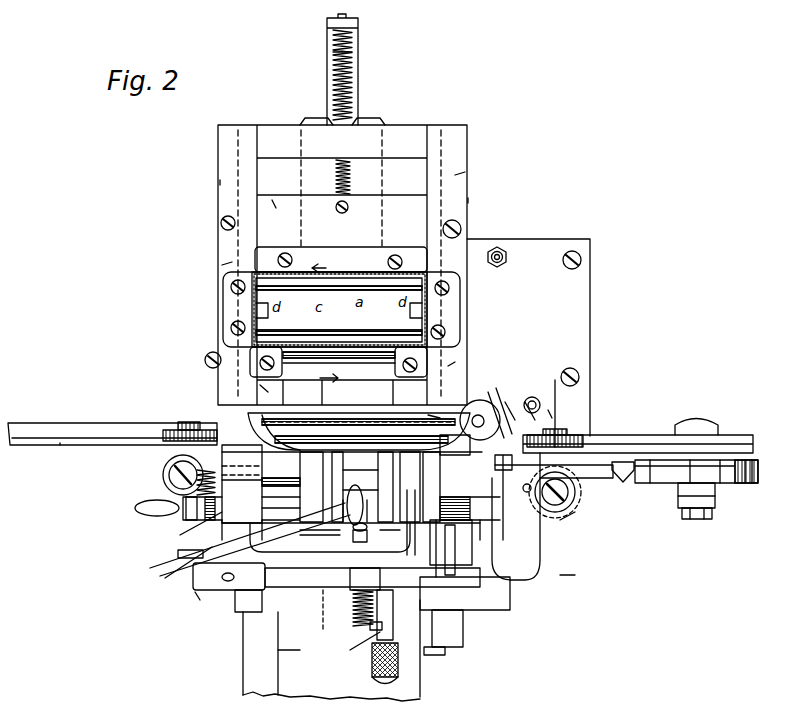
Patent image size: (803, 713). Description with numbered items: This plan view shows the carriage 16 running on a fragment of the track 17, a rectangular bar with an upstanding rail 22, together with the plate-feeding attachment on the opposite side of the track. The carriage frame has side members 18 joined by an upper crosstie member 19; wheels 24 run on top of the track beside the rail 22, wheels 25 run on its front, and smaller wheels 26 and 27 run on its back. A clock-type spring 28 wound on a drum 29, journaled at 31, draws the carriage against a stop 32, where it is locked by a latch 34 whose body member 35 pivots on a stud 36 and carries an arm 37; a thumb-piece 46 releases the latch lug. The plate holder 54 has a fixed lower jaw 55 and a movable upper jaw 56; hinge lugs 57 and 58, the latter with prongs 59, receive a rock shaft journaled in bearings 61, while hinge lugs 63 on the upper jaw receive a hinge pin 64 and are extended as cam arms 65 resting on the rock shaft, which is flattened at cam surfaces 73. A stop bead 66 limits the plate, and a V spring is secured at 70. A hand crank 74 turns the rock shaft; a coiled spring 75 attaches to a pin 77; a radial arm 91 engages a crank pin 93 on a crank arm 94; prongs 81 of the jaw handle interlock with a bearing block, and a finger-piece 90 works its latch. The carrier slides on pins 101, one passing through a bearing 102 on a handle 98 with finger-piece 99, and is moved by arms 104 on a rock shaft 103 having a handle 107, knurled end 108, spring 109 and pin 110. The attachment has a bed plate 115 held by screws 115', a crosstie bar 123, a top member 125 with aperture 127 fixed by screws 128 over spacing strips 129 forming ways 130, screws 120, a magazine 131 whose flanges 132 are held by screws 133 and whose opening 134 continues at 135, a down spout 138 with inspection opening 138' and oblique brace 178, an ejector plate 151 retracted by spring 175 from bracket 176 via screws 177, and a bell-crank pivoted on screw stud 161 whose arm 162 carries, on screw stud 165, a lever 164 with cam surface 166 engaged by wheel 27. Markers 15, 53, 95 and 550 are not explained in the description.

The feed direction arrow 15 is at (346, 454).
The carriage 16 is at (550, 569).
The track 17 is at (28, 425).
The side members 18 is at (232, 612).
The upper crosstie member 19 is at (305, 612).
The upstanding rail 22 is at (69, 443).
The wheels 24 is at (178, 430).
The second pair of wheels 25 is at (163, 477).
The smaller wheel 26 is at (250, 387).
The wheel 27 is at (504, 405).
The spring 28 is at (676, 476).
The drum 29 is at (746, 484).
The journal 31 is at (698, 408).
The stop 32 is at (560, 520).
The latch 34 is at (562, 584).
The body member 35 is at (560, 575).
The stud 36 is at (527, 519).
The arm 37 is at (465, 593).
The thumb-piece 46 is at (260, 653).
The spindle 53 is at (362, 488).
The holder 54 is at (429, 409).
The lower jaw 55 is at (317, 392).
The upper jaw 56 is at (350, 424).
The hinge lug 57 is at (250, 470).
The hinge lug 58 is at (510, 494).
The prongs 59 is at (516, 516).
The bearings 61 is at (260, 535).
The hinge lugs 63 is at (300, 487).
The hinge pin 64 is at (242, 486).
The cam arms 65 is at (223, 535).
The stop bead 66 is at (451, 540).
The spring attachment 70 is at (195, 592).
The cam surface 73 is at (430, 490).
The hand crank 74 is at (138, 512).
The coiled spring 75 is at (197, 485).
The pin 77 is at (187, 526).
The prongs 81 is at (292, 484).
The finger-piece 90 is at (351, 537).
The radial arm 91 is at (239, 539).
The crank pin 93 is at (173, 567).
The crank arm 94 is at (184, 572).
The pawl 95 is at (367, 538).
The handle 98 is at (393, 592).
The finger-piece 99 is at (446, 653).
The pins 101 is at (463, 549).
The bearing 102 is at (464, 625).
The rock shaft 103 is at (372, 579).
The arms 104 is at (244, 570).
The handle 107 is at (372, 662).
The knurled outer end portion 108 is at (396, 679).
The coiled spring 109 is at (350, 615).
The depending pin 110 is at (381, 620).
The bed plate 115 is at (549, 337).
The screws 115' is at (603, 314).
The screws 120 is at (205, 358).
The crosstie bar 123 is at (401, 130).
The top member 125 is at (220, 180).
The aperture 127 is at (465, 172).
The screws 128 is at (221, 229).
The spacing strips 129 is at (238, 142).
The ways 130 is at (222, 265).
The magazine 131 is at (440, 320).
The outturned flanges 132 is at (274, 250).
The screws 133 is at (231, 326).
The opening 134 is at (340, 298).
The opening 135 is at (338, 366).
The down spout 138 is at (315, 650).
The intermediate opening 138' is at (247, 660).
The ejector plate 151 is at (273, 200).
The screw stud 161 is at (510, 400).
The bell-crank arm 162 is at (560, 394).
The lever 164 is at (530, 400).
The screw stud 165 is at (541, 405).
The cam surface 166 is at (477, 405).
The coiled spring 175 is at (333, 60).
The bracket 176 is at (358, 90).
The screws 177 is at (362, 233).
The oblique brace 178 is at (304, 121).
The collar 550 is at (410, 487).